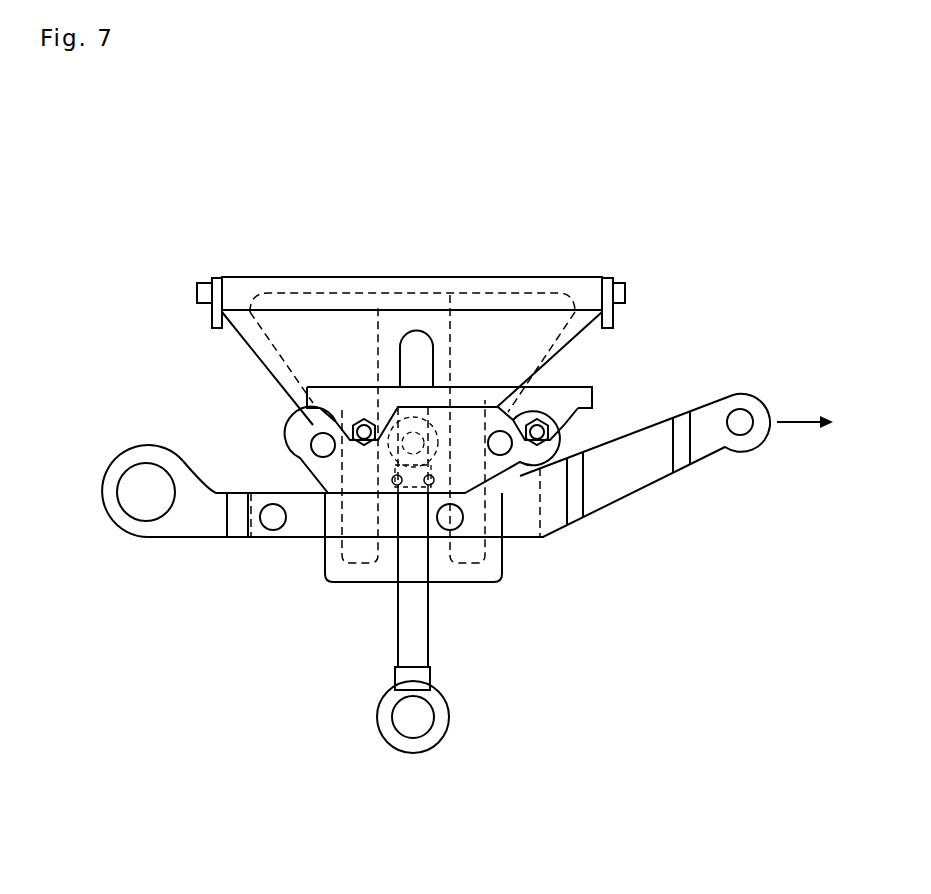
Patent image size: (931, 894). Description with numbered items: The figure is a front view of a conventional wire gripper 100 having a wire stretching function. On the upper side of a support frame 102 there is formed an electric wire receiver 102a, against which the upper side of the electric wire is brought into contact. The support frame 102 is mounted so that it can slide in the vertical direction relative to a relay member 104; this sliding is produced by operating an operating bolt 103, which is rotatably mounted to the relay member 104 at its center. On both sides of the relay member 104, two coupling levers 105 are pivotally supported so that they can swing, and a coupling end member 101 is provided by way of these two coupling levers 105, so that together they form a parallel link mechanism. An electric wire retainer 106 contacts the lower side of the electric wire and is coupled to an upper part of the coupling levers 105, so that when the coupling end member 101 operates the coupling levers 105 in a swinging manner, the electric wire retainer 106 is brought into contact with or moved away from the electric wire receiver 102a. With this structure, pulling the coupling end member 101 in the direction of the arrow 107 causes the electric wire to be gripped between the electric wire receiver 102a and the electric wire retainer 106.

The wire gripper 100 is at (393, 241).
The coupling end member 101 is at (603, 490).
The support frame 102 is at (258, 347).
The electric wire receiver 102a is at (243, 290).
The operating bolt 103 is at (417, 632).
The relay member 104 is at (463, 437).
The coupling levers 105 is at (297, 480).
The electric wire retainer 106 is at (580, 396).
The arrow 107 is at (798, 423).